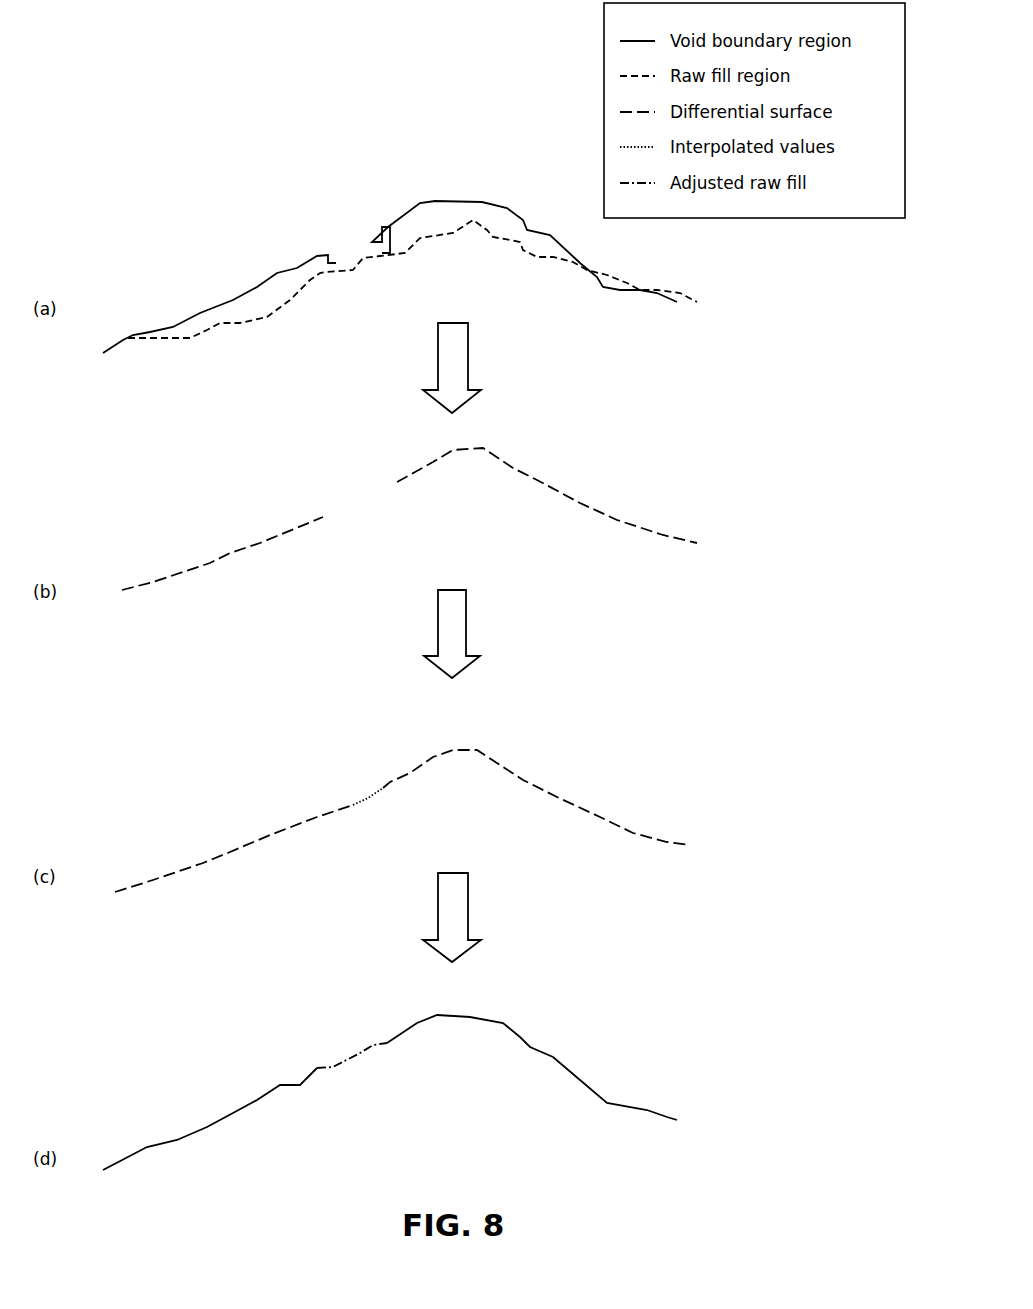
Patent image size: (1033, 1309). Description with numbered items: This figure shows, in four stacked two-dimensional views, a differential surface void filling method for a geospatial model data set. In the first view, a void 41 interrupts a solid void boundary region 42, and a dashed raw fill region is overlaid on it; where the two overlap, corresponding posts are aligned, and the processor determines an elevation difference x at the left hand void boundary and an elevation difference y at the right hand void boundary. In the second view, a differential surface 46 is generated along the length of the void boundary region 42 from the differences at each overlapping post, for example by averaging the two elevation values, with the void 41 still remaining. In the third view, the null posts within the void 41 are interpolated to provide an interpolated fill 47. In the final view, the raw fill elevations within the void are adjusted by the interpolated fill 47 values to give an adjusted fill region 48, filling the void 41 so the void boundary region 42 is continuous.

The void 41 is at (351, 226).
The void boundary region 42 is at (400, 685).
The differential surface 46 is at (406, 670).
The interpolated fill 47 is at (314, 770).
The adjusted fill region 48 is at (315, 1027).
The elevation difference x is at (289, 208).
The elevation difference y is at (399, 186).